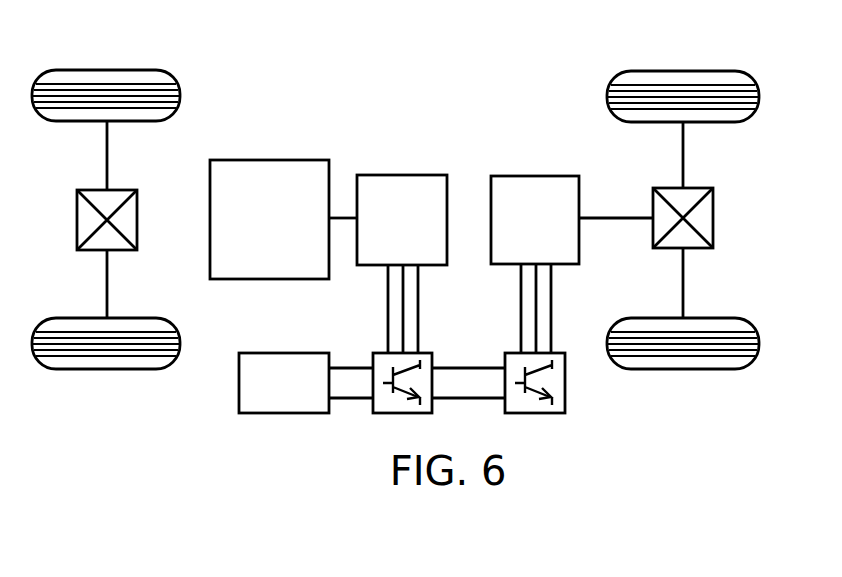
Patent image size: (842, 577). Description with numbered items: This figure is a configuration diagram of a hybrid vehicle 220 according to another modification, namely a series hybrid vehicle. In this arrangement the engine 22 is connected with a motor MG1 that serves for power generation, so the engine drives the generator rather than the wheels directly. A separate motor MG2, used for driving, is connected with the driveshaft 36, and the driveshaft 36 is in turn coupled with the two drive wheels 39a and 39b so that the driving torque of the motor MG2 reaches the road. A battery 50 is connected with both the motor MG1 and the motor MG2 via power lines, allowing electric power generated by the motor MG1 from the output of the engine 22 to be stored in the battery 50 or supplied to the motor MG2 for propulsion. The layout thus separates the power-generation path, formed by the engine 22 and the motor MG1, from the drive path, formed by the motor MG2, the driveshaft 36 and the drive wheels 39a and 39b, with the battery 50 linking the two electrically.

The hybrid vehicle 220 is at (498, 56).
The engine 22 is at (268, 160).
The motor MG1 is at (403, 175).
The motor MG2 is at (536, 176).
The driveshaft 36 is at (609, 217).
The drive wheel 39a is at (682, 70).
The drive wheel 39b is at (682, 369).
The battery 50 is at (283, 353).